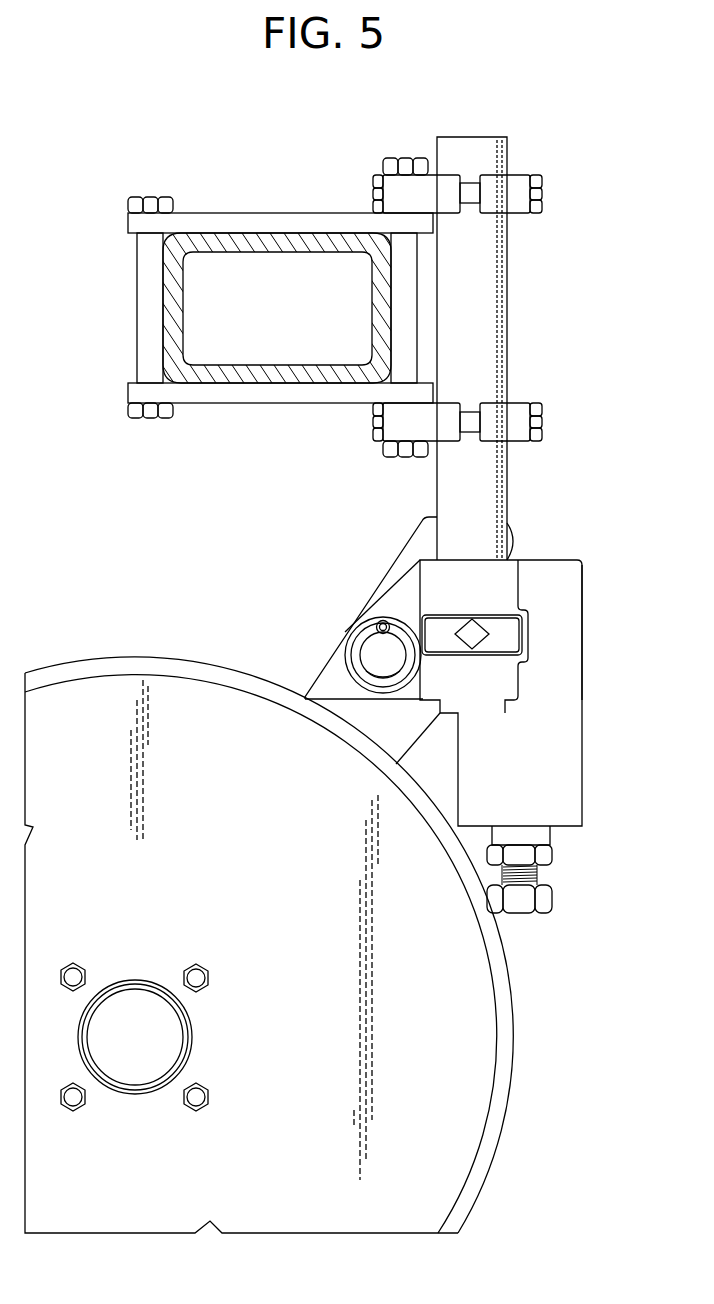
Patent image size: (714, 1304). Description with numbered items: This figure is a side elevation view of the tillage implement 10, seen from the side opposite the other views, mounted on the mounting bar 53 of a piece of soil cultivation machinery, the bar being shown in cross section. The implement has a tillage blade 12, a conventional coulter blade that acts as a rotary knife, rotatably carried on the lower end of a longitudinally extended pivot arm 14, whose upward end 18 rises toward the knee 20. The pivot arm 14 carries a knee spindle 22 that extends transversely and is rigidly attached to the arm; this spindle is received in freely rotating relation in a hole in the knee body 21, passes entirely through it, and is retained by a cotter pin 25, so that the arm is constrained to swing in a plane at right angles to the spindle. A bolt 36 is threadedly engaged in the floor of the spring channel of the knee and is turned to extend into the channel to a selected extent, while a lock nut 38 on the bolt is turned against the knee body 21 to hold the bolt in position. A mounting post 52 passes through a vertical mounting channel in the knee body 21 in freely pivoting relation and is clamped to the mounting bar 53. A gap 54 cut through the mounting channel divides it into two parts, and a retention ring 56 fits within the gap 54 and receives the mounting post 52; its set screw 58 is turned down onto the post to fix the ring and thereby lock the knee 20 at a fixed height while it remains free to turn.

The tillage implement 10 is at (584, 778).
The tillage blade 12 is at (510, 1080).
The pivot arm 14 is at (308, 688).
The upward end 18 is at (423, 523).
The knee 20 is at (582, 733).
The knee body 21 is at (582, 695).
The knee spindle 22 is at (367, 647).
The cotter pin 25 is at (380, 622).
The bolt 36 is at (553, 898).
The lock nut 38 is at (553, 855).
The mounting post 52 is at (507, 280).
The mounting bar 53 is at (303, 253).
The gap 54 is at (500, 615).
The retention ring 56 is at (512, 630).
The set screw 58 is at (488, 638).